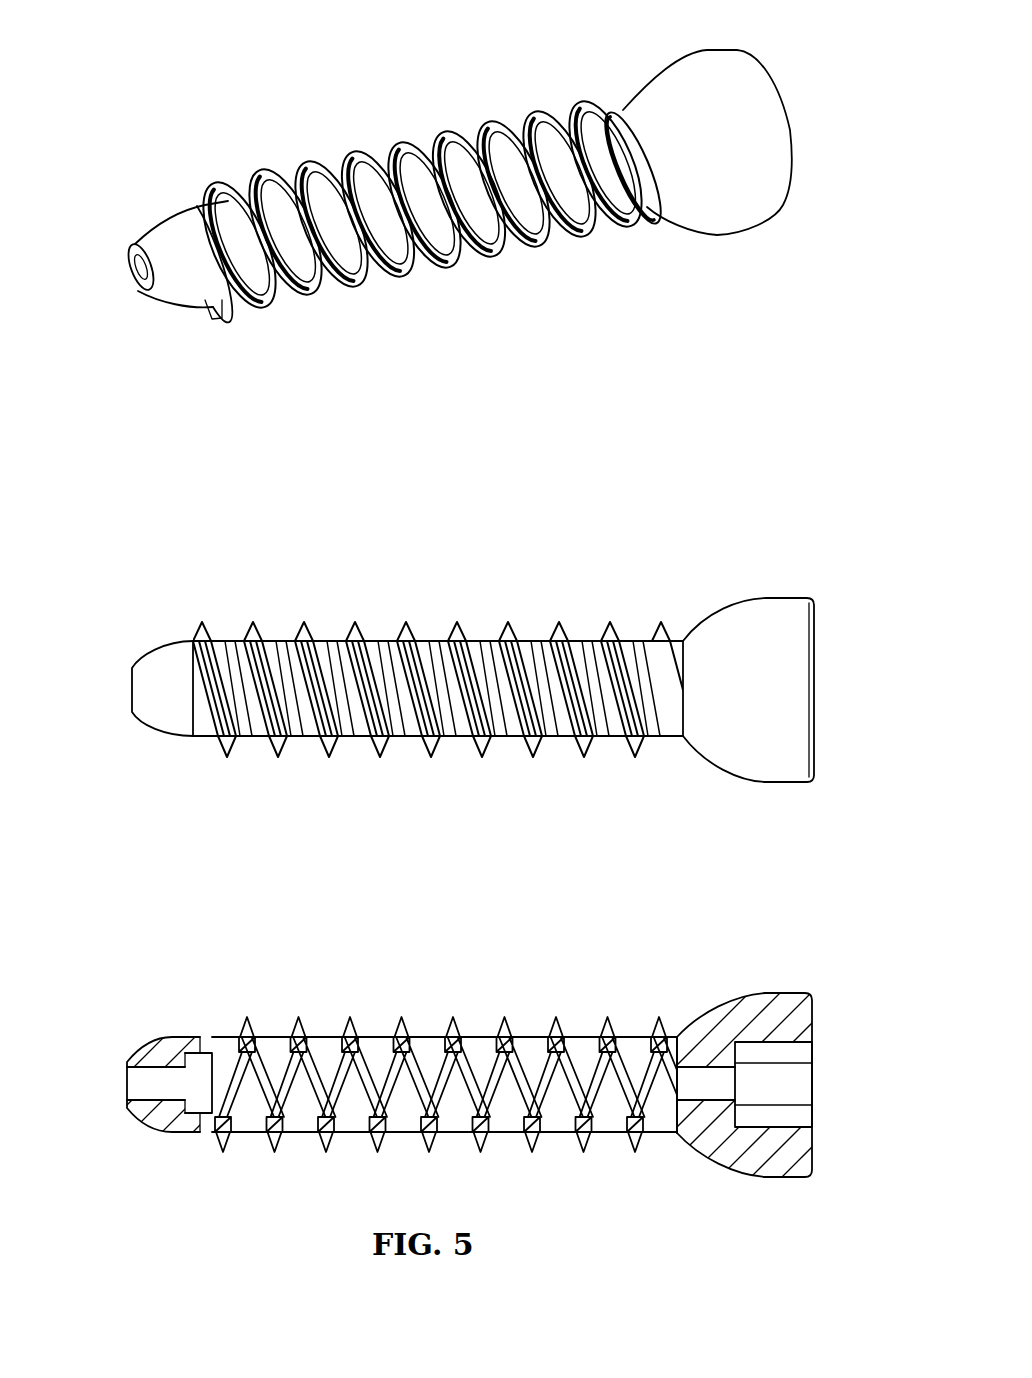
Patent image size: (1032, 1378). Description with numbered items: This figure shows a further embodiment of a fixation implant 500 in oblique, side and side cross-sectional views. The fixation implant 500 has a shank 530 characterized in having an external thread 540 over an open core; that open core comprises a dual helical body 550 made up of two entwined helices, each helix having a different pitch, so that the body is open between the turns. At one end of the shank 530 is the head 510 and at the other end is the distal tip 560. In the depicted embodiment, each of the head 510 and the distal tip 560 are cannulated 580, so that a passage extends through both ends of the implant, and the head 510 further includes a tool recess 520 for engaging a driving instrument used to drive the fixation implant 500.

The fixation implant 500 is at (503, 600).
The head 510 is at (685, 55).
The tool recess 520 is at (790, 1053).
The shank 530 is at (430, 153).
The external thread 540 is at (398, 140).
The dual helical body 550 is at (267, 200).
The distal tip 560 is at (163, 212).
The cannulation 580 is at (140, 267).